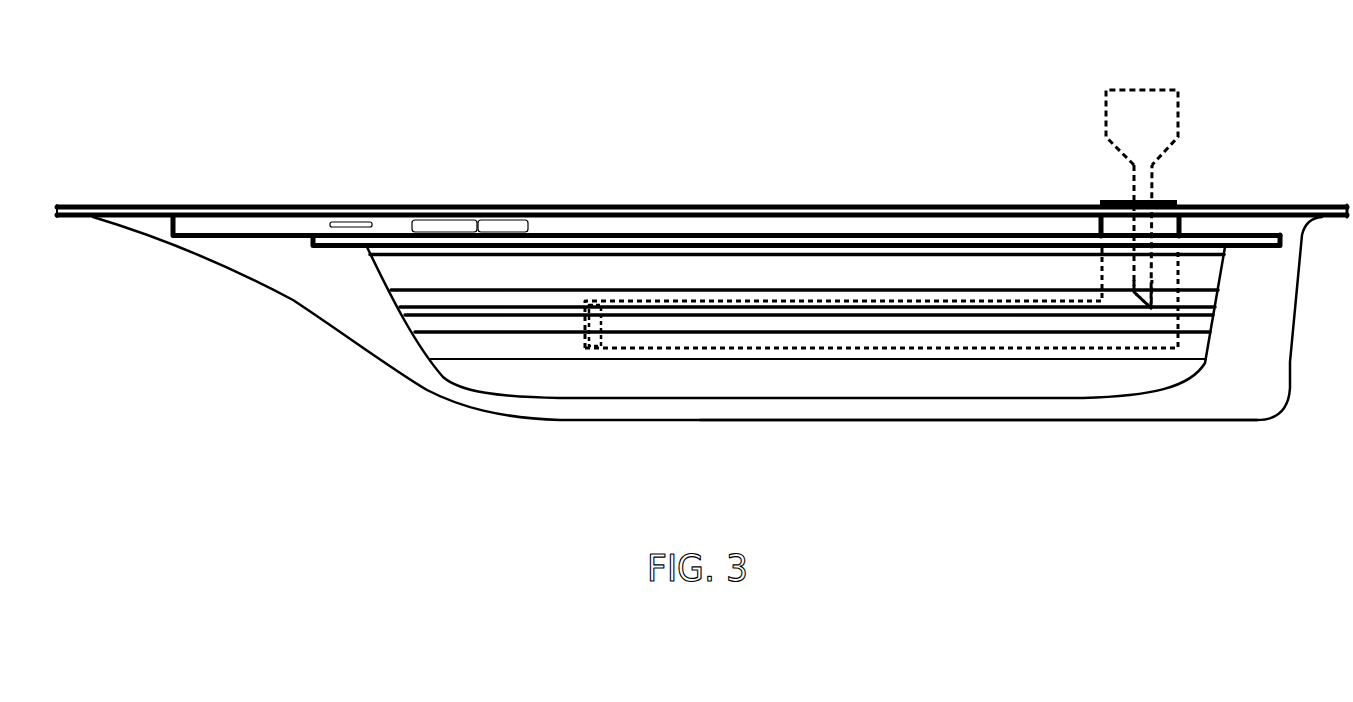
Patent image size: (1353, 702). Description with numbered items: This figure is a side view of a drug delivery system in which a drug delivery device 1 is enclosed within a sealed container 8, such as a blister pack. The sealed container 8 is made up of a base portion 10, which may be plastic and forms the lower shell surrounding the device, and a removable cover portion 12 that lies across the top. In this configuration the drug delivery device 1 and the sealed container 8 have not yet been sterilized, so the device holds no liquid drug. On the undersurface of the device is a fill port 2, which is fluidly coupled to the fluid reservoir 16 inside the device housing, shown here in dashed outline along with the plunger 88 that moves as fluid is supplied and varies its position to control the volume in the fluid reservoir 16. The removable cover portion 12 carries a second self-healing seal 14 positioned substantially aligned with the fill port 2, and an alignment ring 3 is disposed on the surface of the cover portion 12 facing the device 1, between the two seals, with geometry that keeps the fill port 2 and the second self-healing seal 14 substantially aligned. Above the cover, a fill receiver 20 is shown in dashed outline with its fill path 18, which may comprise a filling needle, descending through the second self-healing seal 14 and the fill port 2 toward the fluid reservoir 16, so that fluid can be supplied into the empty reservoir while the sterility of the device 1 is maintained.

The drug delivery device 1 is at (1217, 322).
The fill port 2 is at (1118, 250).
The alignment ring 3 is at (1187, 225).
The sealed container 8 is at (1198, 421).
The base portion 10 is at (297, 301).
The removable cover portion 12 is at (117, 204).
The second self-healing seal 14 is at (1174, 188).
The fluid reservoir 16 is at (838, 300).
The fill path 18 is at (1172, 270).
The fill receiver 20 is at (1086, 109).
The plunger 88 is at (598, 290).